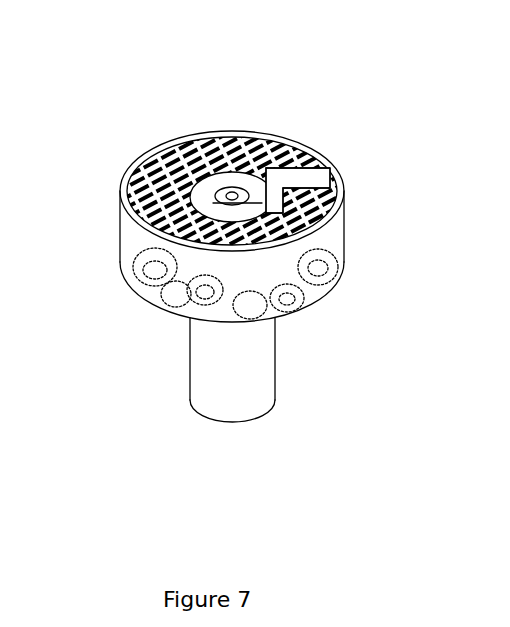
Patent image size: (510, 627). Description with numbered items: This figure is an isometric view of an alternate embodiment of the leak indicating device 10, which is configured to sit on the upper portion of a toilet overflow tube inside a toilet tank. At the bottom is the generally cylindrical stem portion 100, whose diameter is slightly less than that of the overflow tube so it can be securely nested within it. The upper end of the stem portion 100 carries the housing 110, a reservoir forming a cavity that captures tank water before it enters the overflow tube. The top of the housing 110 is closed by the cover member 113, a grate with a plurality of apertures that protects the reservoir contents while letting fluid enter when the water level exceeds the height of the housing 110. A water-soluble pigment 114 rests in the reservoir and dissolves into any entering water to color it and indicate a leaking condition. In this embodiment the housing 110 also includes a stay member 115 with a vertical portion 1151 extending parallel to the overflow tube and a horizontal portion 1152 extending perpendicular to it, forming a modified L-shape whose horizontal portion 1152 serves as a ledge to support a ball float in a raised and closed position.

The device 10 is at (150, 83).
The stem portion 100 is at (197, 375).
The housing 110 is at (137, 246).
The cover member 113 is at (150, 155).
The pigment 114 is at (315, 300).
The stay member 115 is at (343, 150).
The vertical portion 1151 is at (322, 222).
The horizontal portion 1152 is at (338, 172).